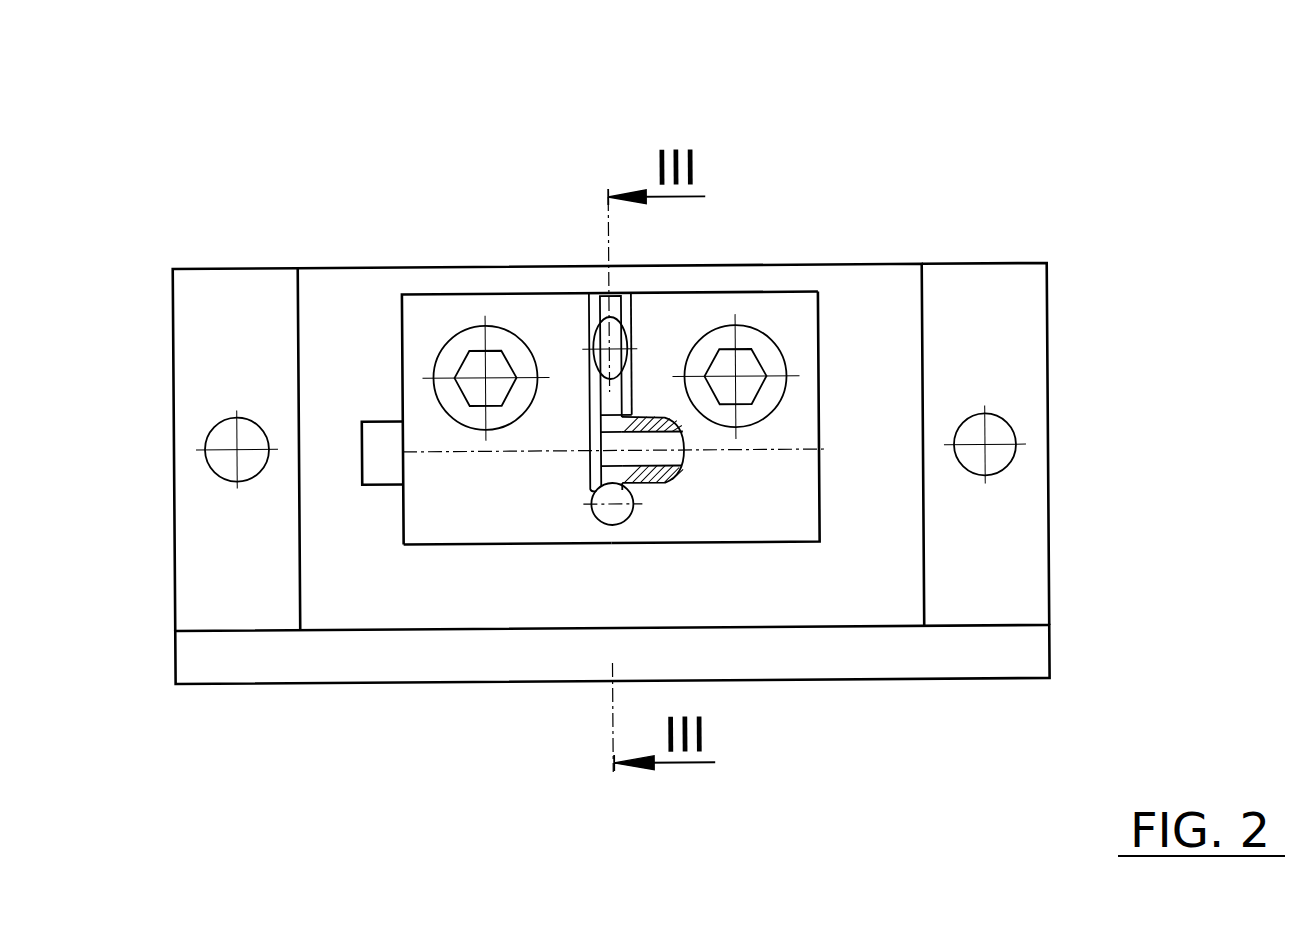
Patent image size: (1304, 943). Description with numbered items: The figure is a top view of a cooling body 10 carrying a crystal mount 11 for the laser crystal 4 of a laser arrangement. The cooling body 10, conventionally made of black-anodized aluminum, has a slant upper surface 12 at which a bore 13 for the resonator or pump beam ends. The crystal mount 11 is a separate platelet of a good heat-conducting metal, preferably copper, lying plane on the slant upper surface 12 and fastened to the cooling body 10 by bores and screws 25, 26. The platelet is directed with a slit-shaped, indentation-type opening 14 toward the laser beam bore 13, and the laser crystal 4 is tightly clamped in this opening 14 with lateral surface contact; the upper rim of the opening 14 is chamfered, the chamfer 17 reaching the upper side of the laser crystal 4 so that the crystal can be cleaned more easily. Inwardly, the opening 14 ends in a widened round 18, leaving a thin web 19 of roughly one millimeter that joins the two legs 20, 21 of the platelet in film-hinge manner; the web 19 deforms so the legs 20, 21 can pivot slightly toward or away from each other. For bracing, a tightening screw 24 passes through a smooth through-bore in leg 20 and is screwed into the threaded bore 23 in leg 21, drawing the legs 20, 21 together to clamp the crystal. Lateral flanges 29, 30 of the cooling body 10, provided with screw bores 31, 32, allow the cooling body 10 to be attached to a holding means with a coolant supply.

The laser crystal 4 is at (611, 312).
The cooling body 10 is at (262, 657).
The crystal mount 11 is at (401, 356).
The slant upper surface 12 is at (370, 586).
The bore 13 is at (595, 330).
The slit-shaped opening 14 is at (632, 318).
The chamfer 17 is at (597, 465).
The widened round 18 is at (617, 512).
The web 19 is at (643, 528).
The leg 20 is at (475, 503).
The leg 21 is at (677, 461).
The threaded bore 23 is at (773, 502).
The tightening screw 24 is at (383, 443).
The fastening screw 25 is at (462, 348).
The fastening screw 26 is at (770, 360).
The lateral flange 29 is at (215, 567).
The lateral flange 30 is at (1005, 555).
The screw bore 31 is at (210, 430).
The screw bore 32 is at (1007, 422).